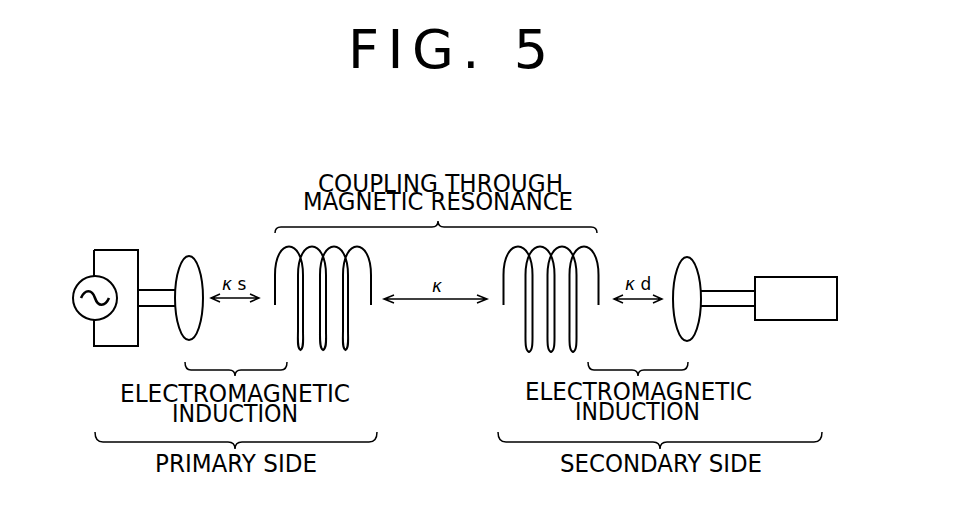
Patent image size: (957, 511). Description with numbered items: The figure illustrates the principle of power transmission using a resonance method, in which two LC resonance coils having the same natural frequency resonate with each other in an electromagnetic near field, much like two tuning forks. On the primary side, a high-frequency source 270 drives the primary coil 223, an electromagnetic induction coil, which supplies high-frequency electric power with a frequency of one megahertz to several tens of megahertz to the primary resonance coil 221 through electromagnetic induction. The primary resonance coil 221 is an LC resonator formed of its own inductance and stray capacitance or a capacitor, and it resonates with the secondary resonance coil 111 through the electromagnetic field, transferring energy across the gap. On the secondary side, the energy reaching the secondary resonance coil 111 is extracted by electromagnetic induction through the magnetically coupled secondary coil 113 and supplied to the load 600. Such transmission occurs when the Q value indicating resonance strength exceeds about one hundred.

The high-frequency power source (AC source) 270 is at (87, 277).
The primary coil 223 is at (188, 257).
The primary resonance coil 221 is at (323, 351).
The secondary resonance coil 111 is at (554, 340).
The secondary coil 113 is at (688, 257).
The load 600 is at (795, 277).